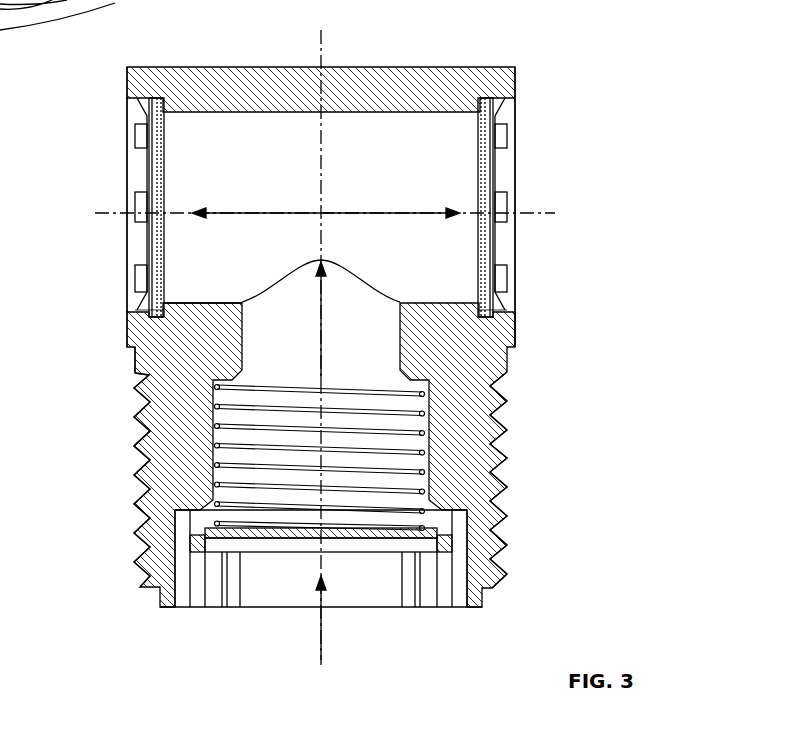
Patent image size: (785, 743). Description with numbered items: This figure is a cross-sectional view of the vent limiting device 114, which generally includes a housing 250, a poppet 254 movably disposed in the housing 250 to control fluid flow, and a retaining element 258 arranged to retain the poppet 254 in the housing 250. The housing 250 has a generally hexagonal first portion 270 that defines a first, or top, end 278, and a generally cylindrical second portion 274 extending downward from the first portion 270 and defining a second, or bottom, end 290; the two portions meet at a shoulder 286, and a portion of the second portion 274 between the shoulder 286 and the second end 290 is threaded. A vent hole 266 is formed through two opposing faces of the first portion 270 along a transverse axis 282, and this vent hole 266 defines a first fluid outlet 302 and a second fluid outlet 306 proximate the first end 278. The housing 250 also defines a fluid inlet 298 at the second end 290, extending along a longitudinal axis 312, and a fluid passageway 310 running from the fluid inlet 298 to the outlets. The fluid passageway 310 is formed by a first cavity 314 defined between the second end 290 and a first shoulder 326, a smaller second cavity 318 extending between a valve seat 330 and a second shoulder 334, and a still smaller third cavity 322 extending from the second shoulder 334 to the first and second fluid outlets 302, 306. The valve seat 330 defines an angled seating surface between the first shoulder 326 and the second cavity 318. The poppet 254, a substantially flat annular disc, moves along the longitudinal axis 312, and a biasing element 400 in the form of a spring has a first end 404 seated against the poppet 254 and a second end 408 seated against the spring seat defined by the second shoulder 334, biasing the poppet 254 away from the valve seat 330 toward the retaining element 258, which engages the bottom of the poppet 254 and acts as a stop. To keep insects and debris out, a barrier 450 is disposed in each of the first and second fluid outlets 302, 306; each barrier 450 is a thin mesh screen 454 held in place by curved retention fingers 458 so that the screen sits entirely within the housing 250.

The vent limiting device 114 is at (532, 47).
The first end 278 is at (457, 67).
The mesh screen 454 is at (162, 140).
The first fluid outlet 302 is at (146, 182).
The second fluid outlet 306 is at (512, 150).
The curved retention fingers 458 is at (136, 140).
The barrier 450 is at (134, 248).
The first portion 270 is at (128, 110).
The transverse axis 282 is at (520, 213).
The housing 250 is at (540, 347).
The vent hole 266 is at (135, 310).
The shoulder 286 is at (512, 326).
The third cavity 322 is at (242, 327).
The fluid passageway 310 is at (383, 340).
The second shoulder 334 is at (503, 386).
The second end 408 is at (498, 480).
The valve seat 330 is at (178, 505).
The first shoulder 326 is at (148, 455).
The second portion 274 is at (146, 540).
The second cavity 318 is at (426, 430).
The biasing element 400 is at (396, 460).
The poppet 254 is at (440, 507).
The first end 404 is at (218, 524).
The first cavity 314 is at (470, 545).
The retaining element 258 is at (448, 554).
The fluid inlet 298 is at (200, 607).
The second end 290 is at (470, 607).
The longitudinal axis 312 is at (326, 662).